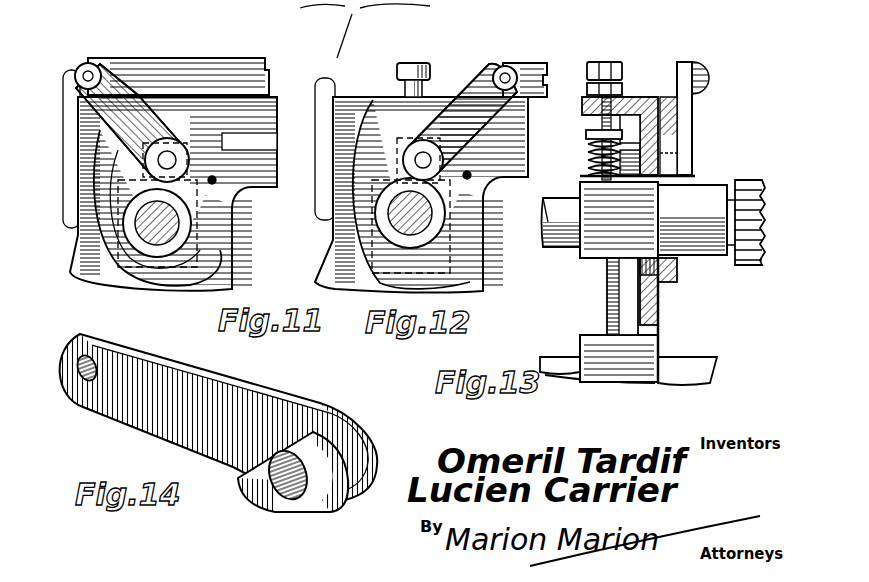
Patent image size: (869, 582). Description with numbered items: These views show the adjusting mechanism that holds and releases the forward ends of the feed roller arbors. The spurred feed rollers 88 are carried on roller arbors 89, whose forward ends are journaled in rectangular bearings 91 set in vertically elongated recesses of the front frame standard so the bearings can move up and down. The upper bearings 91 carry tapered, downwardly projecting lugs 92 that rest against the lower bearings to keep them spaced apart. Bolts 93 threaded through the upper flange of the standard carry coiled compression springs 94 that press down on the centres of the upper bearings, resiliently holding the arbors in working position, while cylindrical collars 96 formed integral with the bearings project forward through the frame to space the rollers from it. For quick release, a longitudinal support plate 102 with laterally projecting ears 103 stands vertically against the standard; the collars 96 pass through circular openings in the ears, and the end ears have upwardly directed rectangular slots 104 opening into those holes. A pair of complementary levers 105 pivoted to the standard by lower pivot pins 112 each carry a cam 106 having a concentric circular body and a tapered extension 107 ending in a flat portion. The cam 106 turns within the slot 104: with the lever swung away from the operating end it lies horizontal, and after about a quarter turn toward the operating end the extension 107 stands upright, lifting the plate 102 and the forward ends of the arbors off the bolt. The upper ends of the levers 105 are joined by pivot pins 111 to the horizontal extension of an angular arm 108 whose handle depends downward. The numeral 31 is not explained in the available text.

In FIG. 13, the plate 31 is at (658, 310).
In FIG. 13, the spurred feed rollers 88 is at (745, 265).
In FIG. 13, the roller arbors 89 is at (552, 215).
In FIG. 13, the bearings 91 is at (612, 238).
In FIG. 13, the lugs 92 is at (615, 305).
In FIG. 12, the bolts 93 is at (405, 63).
In FIG. 13, the bolts 93 is at (604, 75).
In FIG. 13, the coiled compression springs 94 is at (590, 152).
In FIG. 13, the cylindrical collars 96 is at (697, 200).
In FIG. 11, the support plate 102 is at (257, 115).
In FIG. 12, the support plate 102 is at (421, 185).
In FIG. 11, the ears 103 is at (110, 230).
In FIG. 12, the ears 103 is at (482, 262).
In FIG. 11, the slots 104 is at (166, 160).
In FIG. 12, the slots 104 is at (428, 105).
In FIG. 11, the levers 105 is at (125, 113).
In FIG. 12, the levers 105 is at (472, 93).
In FIG. 13, the levers 105 is at (696, 130).
In FIG. 14, the levers 105 is at (230, 398).
In FIG. 14, the cam 106 is at (292, 512).
In FIG. 14, the tapered extension 107 is at (250, 473).
In FIG. 11, the angular arm 108 is at (170, 82).
In FIG. 12, the angular arm 108 is at (548, 72).
In FIG. 13, the angular arm 108 is at (697, 67).
In FIG. 11, the pivot pins 111 is at (100, 72).
In FIG. 13, the pivot pins 112 is at (690, 127).